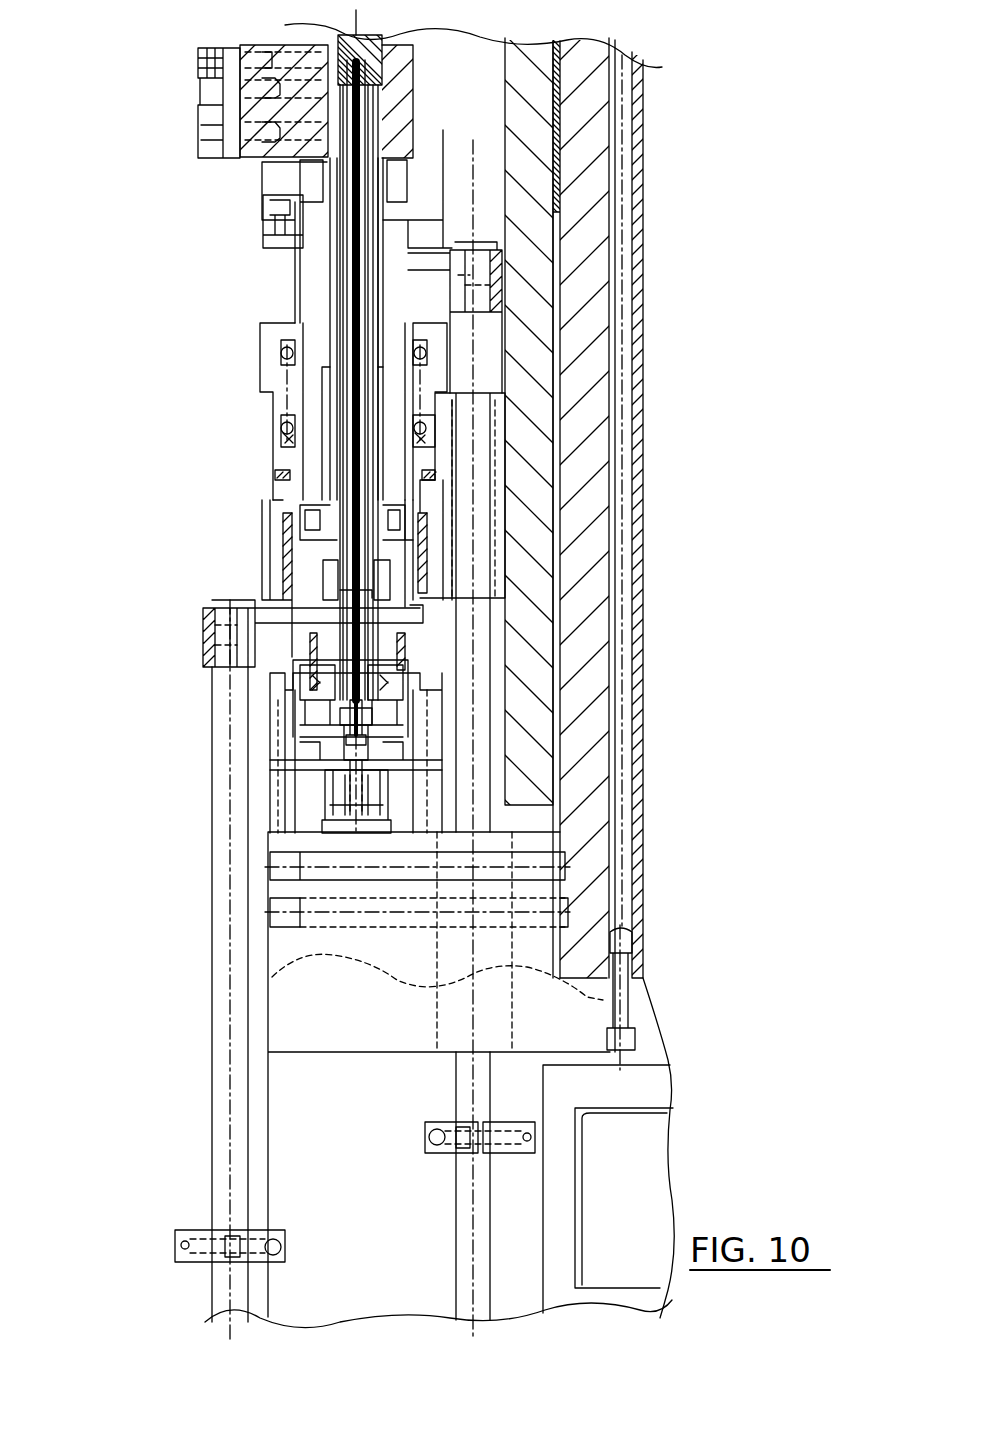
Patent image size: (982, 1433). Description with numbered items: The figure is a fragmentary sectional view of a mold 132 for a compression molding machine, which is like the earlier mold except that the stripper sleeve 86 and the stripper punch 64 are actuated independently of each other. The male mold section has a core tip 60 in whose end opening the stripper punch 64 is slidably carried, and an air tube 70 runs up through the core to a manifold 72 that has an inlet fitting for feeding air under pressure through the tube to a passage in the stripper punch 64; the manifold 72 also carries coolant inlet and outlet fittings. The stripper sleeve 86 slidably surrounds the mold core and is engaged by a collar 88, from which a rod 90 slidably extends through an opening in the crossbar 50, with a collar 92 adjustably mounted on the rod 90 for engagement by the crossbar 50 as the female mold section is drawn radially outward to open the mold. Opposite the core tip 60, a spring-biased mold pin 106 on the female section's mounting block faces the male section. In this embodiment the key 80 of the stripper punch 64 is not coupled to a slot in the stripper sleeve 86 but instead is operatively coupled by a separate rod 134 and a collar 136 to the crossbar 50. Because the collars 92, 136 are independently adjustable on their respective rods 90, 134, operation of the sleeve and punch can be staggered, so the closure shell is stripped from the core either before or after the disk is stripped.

The crossbar 50 is at (300, 1030).
The core tip 60 is at (322, 732).
The stripper punch 64 is at (352, 726).
The air tube 70 is at (358, 168).
The manifold 72 is at (258, 160).
The key 80 is at (262, 612).
The stripper sleeve 86 is at (300, 570).
The collar 88 is at (436, 260).
The rod 90 is at (480, 698).
The collar 92 is at (425, 1137).
The mold pin 106 is at (323, 813).
The mold 132 is at (160, 752).
The rod 134 is at (222, 943).
The collar 136 is at (178, 1240).